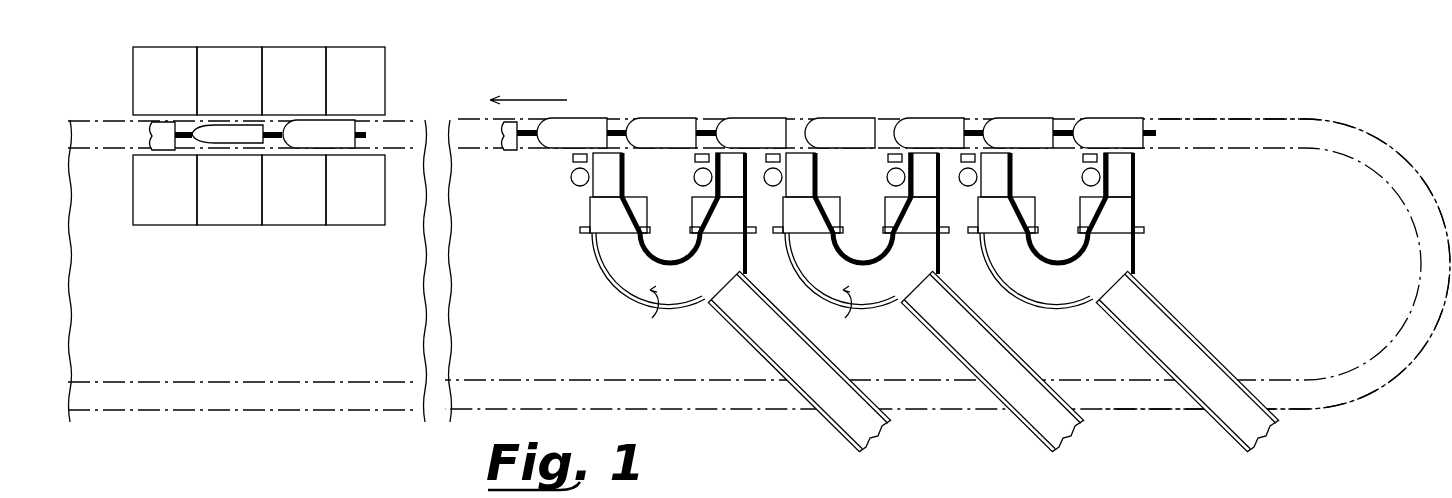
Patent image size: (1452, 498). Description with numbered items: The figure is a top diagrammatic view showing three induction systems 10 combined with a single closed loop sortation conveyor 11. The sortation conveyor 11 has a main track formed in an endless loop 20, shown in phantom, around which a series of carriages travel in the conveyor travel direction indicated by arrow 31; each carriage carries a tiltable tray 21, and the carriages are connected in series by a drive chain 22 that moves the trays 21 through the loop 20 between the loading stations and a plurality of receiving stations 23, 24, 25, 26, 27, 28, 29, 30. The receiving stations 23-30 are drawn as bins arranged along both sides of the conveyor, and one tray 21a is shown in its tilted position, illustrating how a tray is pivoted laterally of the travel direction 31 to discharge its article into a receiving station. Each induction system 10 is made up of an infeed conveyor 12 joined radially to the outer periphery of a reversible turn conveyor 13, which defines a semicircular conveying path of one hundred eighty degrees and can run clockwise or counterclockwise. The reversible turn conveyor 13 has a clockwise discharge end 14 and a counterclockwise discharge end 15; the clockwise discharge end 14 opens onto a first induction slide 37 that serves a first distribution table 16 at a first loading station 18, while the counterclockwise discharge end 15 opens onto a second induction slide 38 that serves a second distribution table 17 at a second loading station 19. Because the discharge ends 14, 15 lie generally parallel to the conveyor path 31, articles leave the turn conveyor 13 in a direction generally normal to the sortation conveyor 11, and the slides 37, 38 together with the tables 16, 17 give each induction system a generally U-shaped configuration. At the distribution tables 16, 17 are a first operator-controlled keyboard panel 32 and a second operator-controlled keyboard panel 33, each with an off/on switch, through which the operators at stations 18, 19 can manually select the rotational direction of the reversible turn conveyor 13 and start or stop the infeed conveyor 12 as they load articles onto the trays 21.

The induction system 10 is at (564, 312).
The sortation conveyor 11 is at (702, 438).
The infeed conveyor 12 is at (873, 441).
The reversible turn conveyor 13 is at (745, 285).
The clockwise discharge end 14 is at (615, 237).
The counterclockwise discharge end 15 is at (722, 237).
The first distribution table 16 is at (617, 128).
The second distribution table 17 is at (736, 152).
The first loading station 18 is at (572, 183).
The second loading station 19 is at (699, 183).
The endless loop 20 is at (1218, 113).
The tiltable tray 21 is at (828, 84).
The tilted tray 21a is at (236, 132).
The drive chain 22 is at (268, 141).
The receiving station 23 is at (165, 81).
The receiving station 24 is at (229, 81).
The receiving station 25 is at (294, 81).
The receiving station 26 is at (355, 81).
The receiving station 27 is at (165, 190).
The receiving station 28 is at (229, 190).
The receiving station 29 is at (294, 190).
The receiving station 30 is at (355, 190).
The conveyor travel direction arrow 31 is at (531, 97).
The first operator-controlled keyboard panel 32 is at (571, 158).
The second operator-controlled keyboard panel 33 is at (694, 158).
The first induction slide 37 is at (612, 208).
The second induction slide 38 is at (730, 212).